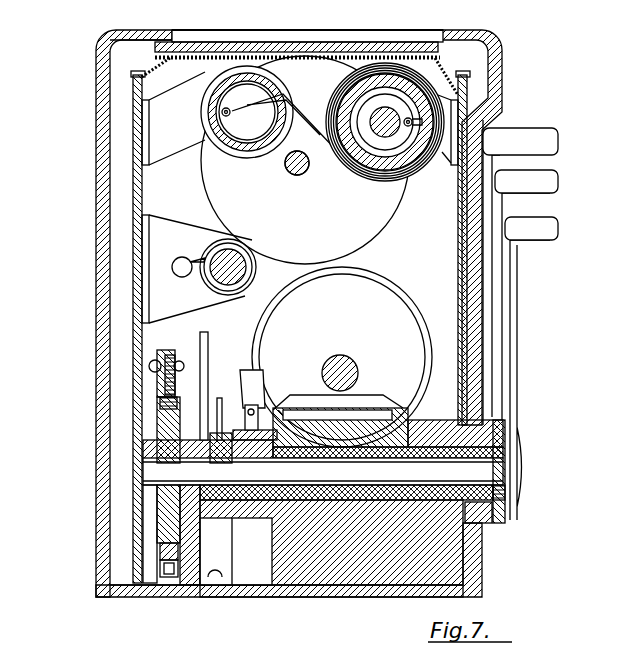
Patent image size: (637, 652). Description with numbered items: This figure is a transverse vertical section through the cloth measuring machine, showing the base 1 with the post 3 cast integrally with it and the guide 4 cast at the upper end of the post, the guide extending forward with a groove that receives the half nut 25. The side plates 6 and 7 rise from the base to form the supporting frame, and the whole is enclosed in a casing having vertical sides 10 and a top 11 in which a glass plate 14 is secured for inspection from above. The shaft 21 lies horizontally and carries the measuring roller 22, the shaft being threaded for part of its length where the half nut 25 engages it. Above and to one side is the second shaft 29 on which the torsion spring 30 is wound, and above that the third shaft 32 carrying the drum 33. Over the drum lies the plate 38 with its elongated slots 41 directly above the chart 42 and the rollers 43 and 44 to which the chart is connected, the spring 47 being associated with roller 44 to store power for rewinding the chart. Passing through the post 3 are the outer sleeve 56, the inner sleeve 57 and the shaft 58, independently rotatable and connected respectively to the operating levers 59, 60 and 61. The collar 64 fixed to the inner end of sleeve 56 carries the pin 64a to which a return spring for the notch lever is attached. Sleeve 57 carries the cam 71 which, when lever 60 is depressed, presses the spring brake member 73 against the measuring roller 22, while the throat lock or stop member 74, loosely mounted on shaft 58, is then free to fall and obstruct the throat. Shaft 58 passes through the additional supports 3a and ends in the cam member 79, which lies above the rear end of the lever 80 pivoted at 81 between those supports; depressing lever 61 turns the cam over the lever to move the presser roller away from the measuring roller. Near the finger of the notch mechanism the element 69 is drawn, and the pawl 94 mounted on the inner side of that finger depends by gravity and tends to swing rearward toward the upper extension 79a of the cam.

The base 1 is at (250, 595).
The post 3 is at (323, 543).
The additional supports 3a is at (143, 523).
The guide 4 is at (410, 417).
The side plate 6 is at (467, 300).
The side plate 7 is at (137, 400).
The vertical sides of casing 10 is at (97, 240).
The top of casing 11 is at (134, 30).
The glass plate 14 is at (283, 40).
The shaft 21 is at (348, 372).
The measuring roller 22 is at (358, 287).
The half nut 25 is at (362, 393).
The second shaft 29 is at (227, 285).
The torsion spring 30 is at (207, 280).
The third shaft 32 is at (300, 176).
The drum 33 is at (365, 233).
The plate 38 is at (313, 54).
The elongated slots 41 is at (236, 57).
The chart 42 is at (310, 170).
The roller 43 is at (253, 147).
The roller 44 is at (378, 160).
The spring 47 is at (390, 140).
The outer sleeve 56 is at (480, 523).
The inner sleeve 57 is at (512, 486).
The shaft 58 is at (488, 473).
The operating lever 59 is at (485, 338).
The operating lever 60 is at (498, 347).
The operating lever 61 is at (508, 352).
The collar 64 is at (256, 520).
The pin 64a is at (333, 410).
The adjusting screw 69 is at (157, 380).
The cam 71 is at (218, 420).
The spring brake member 73 is at (253, 383).
The throat lock or stop member 74 is at (205, 360).
The cam member 79 is at (157, 500).
The upper extension of cam 79a is at (167, 410).
The lever 80 is at (170, 580).
The pivot 81 is at (163, 565).
The pawl 94 is at (180, 357).